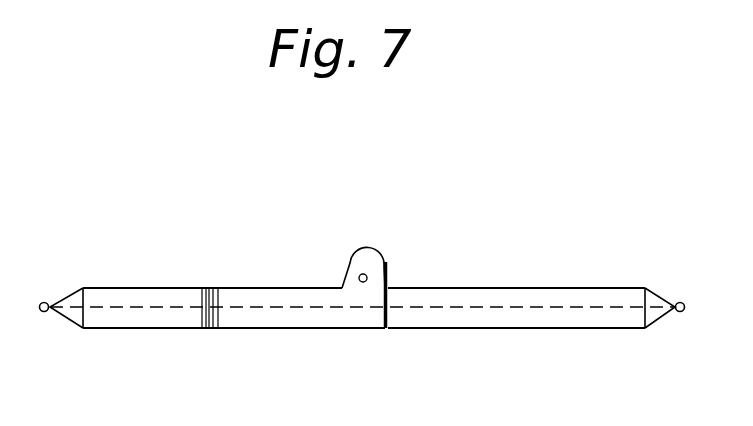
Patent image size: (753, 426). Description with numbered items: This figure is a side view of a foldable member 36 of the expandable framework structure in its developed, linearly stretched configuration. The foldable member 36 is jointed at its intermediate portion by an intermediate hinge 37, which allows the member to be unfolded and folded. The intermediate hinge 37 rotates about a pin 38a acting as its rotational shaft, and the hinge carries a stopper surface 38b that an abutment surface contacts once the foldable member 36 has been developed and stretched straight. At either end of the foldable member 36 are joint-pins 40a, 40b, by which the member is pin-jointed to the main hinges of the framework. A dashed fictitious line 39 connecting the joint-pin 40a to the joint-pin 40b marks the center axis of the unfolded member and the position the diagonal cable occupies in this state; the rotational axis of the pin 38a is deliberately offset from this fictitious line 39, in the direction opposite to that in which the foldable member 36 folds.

The foldable member 36 is at (217, 288).
The intermediate hinge 37 is at (357, 263).
The pin 38a is at (367, 276).
The stopper surface 38b is at (388, 313).
The fictitious line 39 is at (588, 309).
The joint-pin 40a is at (44, 302).
The joint-pin 40b is at (680, 302).